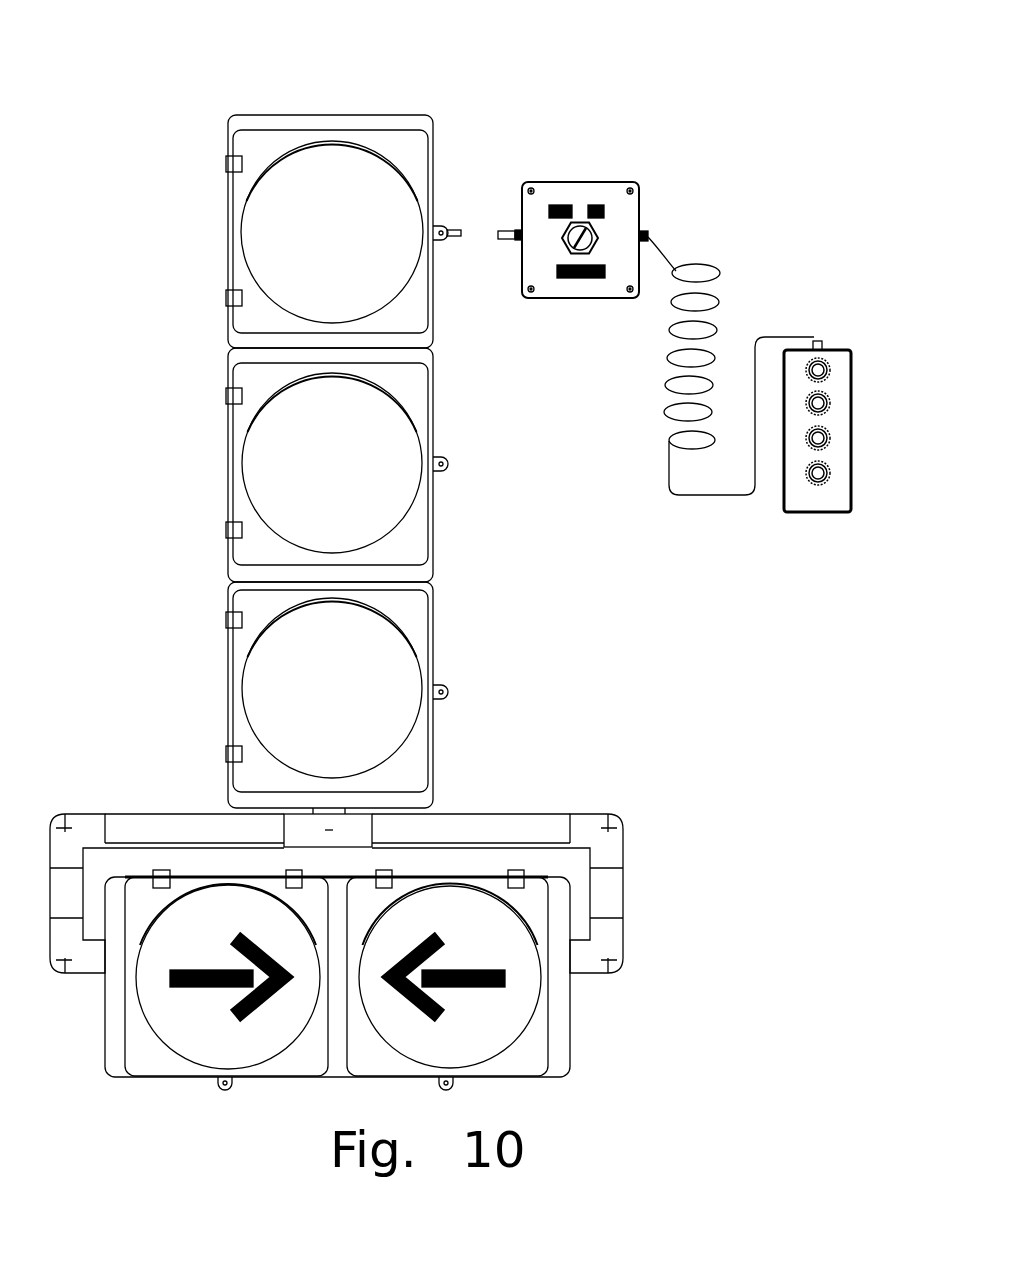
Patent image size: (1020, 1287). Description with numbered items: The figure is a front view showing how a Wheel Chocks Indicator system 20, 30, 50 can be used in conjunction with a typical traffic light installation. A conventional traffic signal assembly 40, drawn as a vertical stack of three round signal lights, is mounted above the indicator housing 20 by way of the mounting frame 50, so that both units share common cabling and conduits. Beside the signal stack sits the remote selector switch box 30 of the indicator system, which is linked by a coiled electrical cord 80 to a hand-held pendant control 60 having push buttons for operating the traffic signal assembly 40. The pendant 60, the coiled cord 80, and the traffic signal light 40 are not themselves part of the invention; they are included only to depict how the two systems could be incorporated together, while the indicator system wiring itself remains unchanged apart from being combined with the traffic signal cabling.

The traffic signal assembly 40 is at (274, 100).
The Wheel Chocks Indicator system component 30 is at (596, 172).
The coiled electrical cord 80 is at (658, 457).
The pendant control 60 is at (808, 525).
The Wheel Chocks Indicator system component 50 is at (538, 800).
The Wheel Chocks Indicator system component 20 is at (586, 1032).